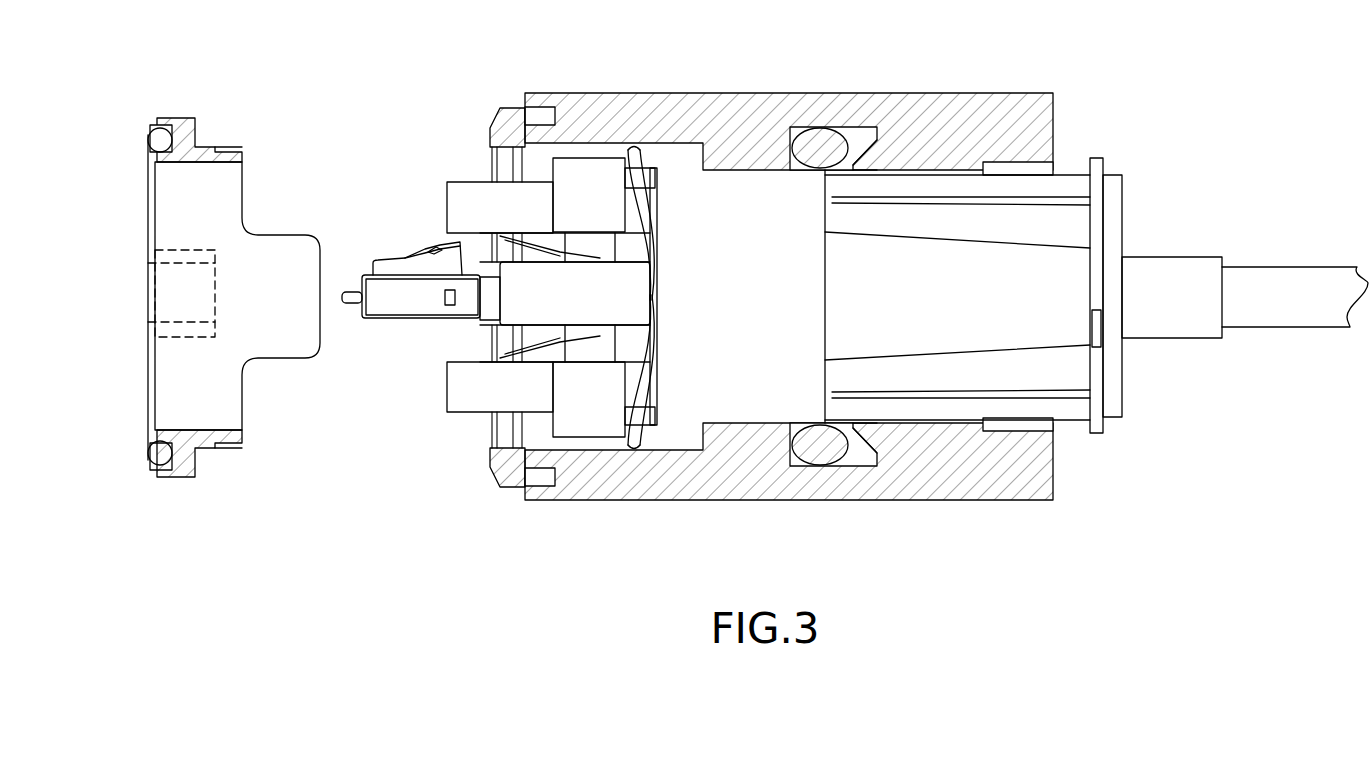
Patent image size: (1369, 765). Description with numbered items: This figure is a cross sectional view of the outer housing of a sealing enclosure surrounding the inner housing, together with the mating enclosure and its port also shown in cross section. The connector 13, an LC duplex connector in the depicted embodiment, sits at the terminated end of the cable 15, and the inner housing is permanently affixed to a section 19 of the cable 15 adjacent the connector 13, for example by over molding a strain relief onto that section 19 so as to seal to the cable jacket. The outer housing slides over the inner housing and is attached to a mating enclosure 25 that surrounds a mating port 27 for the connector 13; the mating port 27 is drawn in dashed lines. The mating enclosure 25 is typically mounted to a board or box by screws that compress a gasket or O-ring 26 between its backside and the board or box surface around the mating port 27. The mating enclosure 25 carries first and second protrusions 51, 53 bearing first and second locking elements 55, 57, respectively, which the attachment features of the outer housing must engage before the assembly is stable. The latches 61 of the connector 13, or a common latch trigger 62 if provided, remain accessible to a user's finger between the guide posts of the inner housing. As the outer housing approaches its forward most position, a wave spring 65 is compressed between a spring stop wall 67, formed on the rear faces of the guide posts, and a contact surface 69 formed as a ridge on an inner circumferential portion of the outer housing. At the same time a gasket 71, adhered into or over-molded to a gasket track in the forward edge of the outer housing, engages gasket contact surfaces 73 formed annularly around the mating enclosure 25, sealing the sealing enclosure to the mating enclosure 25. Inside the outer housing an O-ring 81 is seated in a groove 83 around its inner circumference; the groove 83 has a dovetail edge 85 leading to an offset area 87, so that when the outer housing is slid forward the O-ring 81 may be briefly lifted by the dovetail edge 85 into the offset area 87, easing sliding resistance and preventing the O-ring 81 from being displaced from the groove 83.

The connector 13 is at (392, 300).
The cable 15 is at (1293, 310).
The section of the cable 19 is at (1222, 283).
The mating enclosure 25 is at (207, 203).
The O-ring 26 is at (158, 453).
The mating port 27 is at (193, 340).
The first protrusion 51 is at (242, 155).
The second protrusion 53 is at (243, 435).
The first locking element 55 is at (227, 148).
The second locking element 57 is at (232, 445).
The latches 61 is at (455, 248).
The common latch trigger 62 is at (520, 238).
The wave spring 65 is at (638, 150).
The spring stop wall 67 is at (625, 213).
The contact surface 69 is at (700, 143).
The gasket 71 is at (513, 112).
The gasket contact surfaces 73 is at (197, 148).
The O-ring 81 is at (805, 158).
The groove 83 is at (840, 133).
The dovetail edge 85 is at (860, 165).
The offset area 87 is at (867, 133).